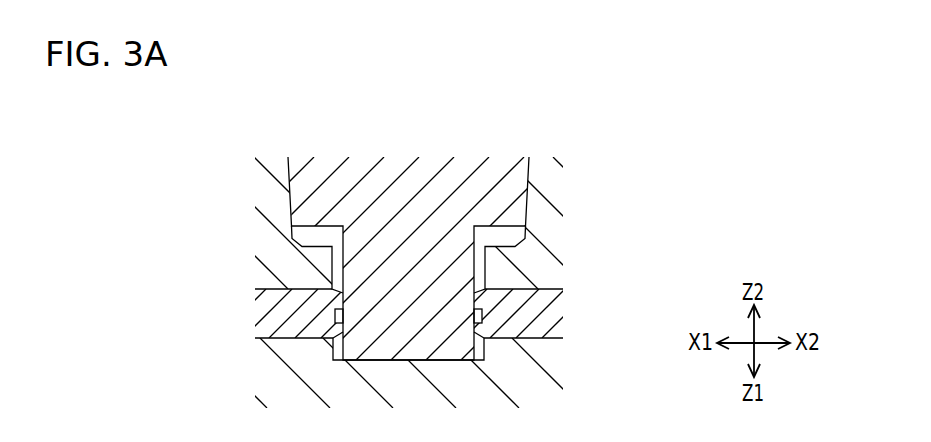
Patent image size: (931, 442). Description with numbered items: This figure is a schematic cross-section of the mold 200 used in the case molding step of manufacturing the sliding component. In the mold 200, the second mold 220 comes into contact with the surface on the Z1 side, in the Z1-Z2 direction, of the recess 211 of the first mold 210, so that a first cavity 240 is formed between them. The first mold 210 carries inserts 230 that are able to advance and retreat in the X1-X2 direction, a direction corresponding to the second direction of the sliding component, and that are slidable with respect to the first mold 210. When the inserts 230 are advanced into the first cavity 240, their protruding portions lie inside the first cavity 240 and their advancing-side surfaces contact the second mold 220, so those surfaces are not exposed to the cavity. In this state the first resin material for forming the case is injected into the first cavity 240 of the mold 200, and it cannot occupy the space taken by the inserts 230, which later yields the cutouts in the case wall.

The mold 200 is at (240, 150).
The first mold 210 is at (278, 370).
The recess 211 is at (498, 238).
The second mold 220 is at (407, 185).
The inserts 230 is at (278, 318).
The first cavity 240 is at (318, 240).